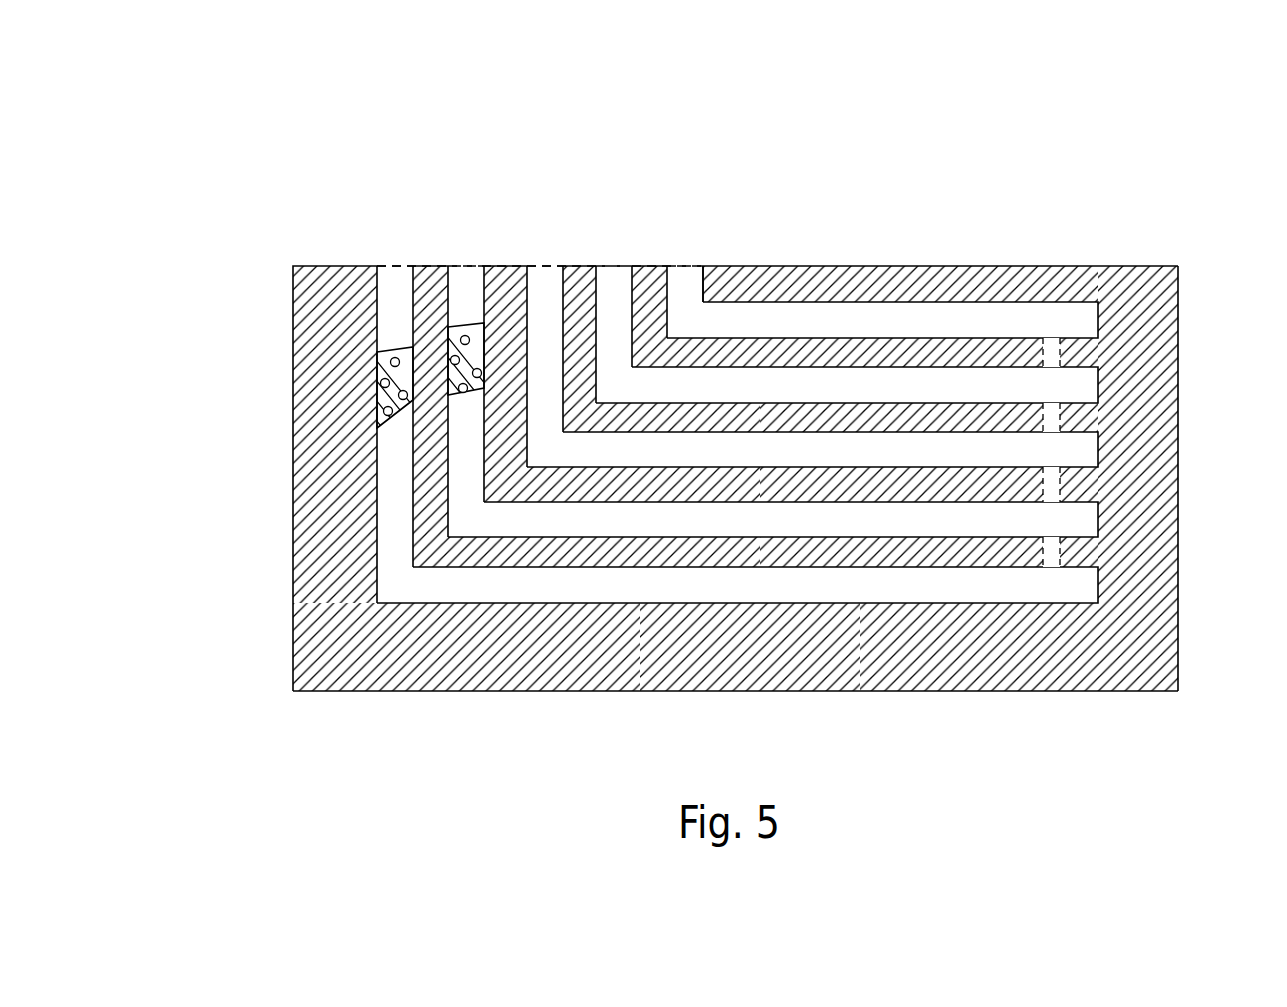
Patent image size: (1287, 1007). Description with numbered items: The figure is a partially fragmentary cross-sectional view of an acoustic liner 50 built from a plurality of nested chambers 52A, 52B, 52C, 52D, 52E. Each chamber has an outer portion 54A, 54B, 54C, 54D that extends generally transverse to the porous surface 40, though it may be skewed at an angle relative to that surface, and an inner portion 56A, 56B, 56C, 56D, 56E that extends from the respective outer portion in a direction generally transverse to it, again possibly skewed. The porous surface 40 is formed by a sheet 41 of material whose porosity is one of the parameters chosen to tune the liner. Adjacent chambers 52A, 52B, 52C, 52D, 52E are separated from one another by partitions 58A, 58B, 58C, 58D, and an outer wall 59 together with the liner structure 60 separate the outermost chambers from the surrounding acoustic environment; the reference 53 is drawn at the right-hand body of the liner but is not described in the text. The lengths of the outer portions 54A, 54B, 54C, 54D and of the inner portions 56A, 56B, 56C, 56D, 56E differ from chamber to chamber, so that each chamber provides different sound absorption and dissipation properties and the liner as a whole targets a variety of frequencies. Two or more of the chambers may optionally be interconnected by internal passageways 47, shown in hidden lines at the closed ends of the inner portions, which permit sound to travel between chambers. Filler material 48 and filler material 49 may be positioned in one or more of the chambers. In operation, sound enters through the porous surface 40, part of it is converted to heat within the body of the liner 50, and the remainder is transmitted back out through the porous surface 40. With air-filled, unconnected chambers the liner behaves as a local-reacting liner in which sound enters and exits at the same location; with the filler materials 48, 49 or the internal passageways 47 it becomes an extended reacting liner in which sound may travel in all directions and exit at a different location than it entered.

The porous surface 40 is at (823, 267).
The sheet 41 is at (697, 265).
The internal passageways 47 is at (1060, 353).
The filler material 48 is at (392, 380).
The filler material 49 is at (472, 360).
The acoustic liner 50 is at (250, 538).
The chamber 52A is at (395, 273).
The chamber 52B is at (472, 273).
The chamber 52C is at (547, 273).
The chamber 52D is at (647, 273).
The chamber 52E is at (690, 265).
The right wall 53 is at (1182, 353).
The outer portion 54A is at (385, 266).
The outer portion 54B is at (458, 263).
The outer portion 54C is at (535, 265).
The outer portion 54D is at (610, 273).
The inner portion 56A is at (502, 588).
The inner portion 56B is at (593, 523).
The inner portion 56C is at (663, 458).
The inner portion 56D is at (728, 392).
The inner portion 56E is at (800, 323).
The partition 58A is at (423, 273).
The partition 58B is at (497, 273).
The partition 58C is at (580, 267).
The partition 58D is at (657, 273).
The outer wall 59 is at (318, 266).
The liner structure 60 is at (753, 265).